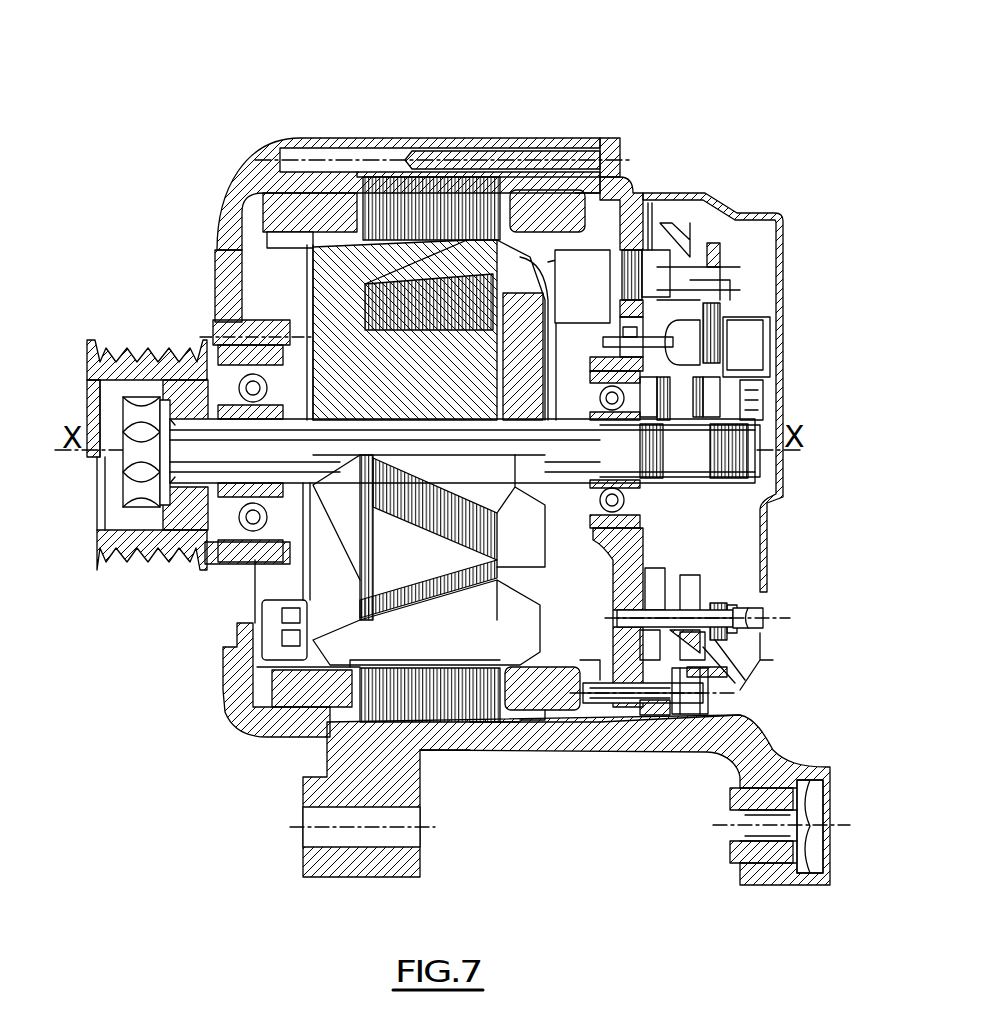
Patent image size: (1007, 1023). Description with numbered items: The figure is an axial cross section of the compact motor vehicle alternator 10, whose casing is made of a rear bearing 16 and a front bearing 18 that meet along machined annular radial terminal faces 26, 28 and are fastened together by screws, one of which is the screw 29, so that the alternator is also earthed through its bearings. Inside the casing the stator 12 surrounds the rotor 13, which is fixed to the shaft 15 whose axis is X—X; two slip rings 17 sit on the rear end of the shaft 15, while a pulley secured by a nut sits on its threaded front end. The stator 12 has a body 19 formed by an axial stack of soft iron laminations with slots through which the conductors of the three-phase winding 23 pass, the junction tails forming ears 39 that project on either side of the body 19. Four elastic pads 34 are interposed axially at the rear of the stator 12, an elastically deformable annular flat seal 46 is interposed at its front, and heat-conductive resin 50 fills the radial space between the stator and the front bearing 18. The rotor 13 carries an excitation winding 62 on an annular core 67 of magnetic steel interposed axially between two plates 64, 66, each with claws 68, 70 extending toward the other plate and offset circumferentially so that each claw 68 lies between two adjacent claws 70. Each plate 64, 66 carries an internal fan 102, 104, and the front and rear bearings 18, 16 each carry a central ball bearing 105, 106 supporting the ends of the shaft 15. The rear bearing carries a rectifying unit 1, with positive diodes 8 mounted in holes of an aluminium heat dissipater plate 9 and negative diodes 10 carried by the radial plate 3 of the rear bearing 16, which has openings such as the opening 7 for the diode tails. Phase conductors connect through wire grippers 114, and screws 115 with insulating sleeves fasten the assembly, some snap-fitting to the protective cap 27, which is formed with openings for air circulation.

The rectifying unit 1 is at (707, 230).
The radial plate 3 is at (610, 660).
The opening 7 is at (735, 290).
The positive diode 8 is at (785, 230).
The heat dissipater plate 9 is at (725, 693).
The negative diode 10 is at (648, 255).
The stator 12 is at (500, 715).
The rotor 13 is at (282, 143).
The shaft 15 is at (205, 440).
The rear bearing 16 is at (668, 753).
The slip rings 17 is at (677, 460).
The front bearing 18 is at (223, 712).
The stator body 19 is at (443, 722).
The stator winding 23 is at (328, 180).
The radial terminal face 26 is at (503, 190).
The protective cap 27 is at (735, 237).
The radial terminal face 28 is at (488, 747).
The screw 29 is at (613, 170).
The elastic pad 34 is at (520, 150).
The ears 39 is at (570, 170).
The annular flat seal 46 is at (340, 727).
The resin 50 is at (383, 177).
The excitation winding 62 is at (418, 280).
The metal plate 64 is at (327, 290).
The metal plate 66 is at (560, 265).
The core 67 is at (443, 350).
The claws 68 is at (313, 660).
The claws 70 is at (527, 660).
The front fan 102 is at (260, 647).
The rear fan 104 is at (597, 717).
The ball bearing 105 is at (233, 543).
The ball bearing 106 is at (643, 533).
The wire grippers 114 is at (710, 660).
The screws 115 is at (720, 630).